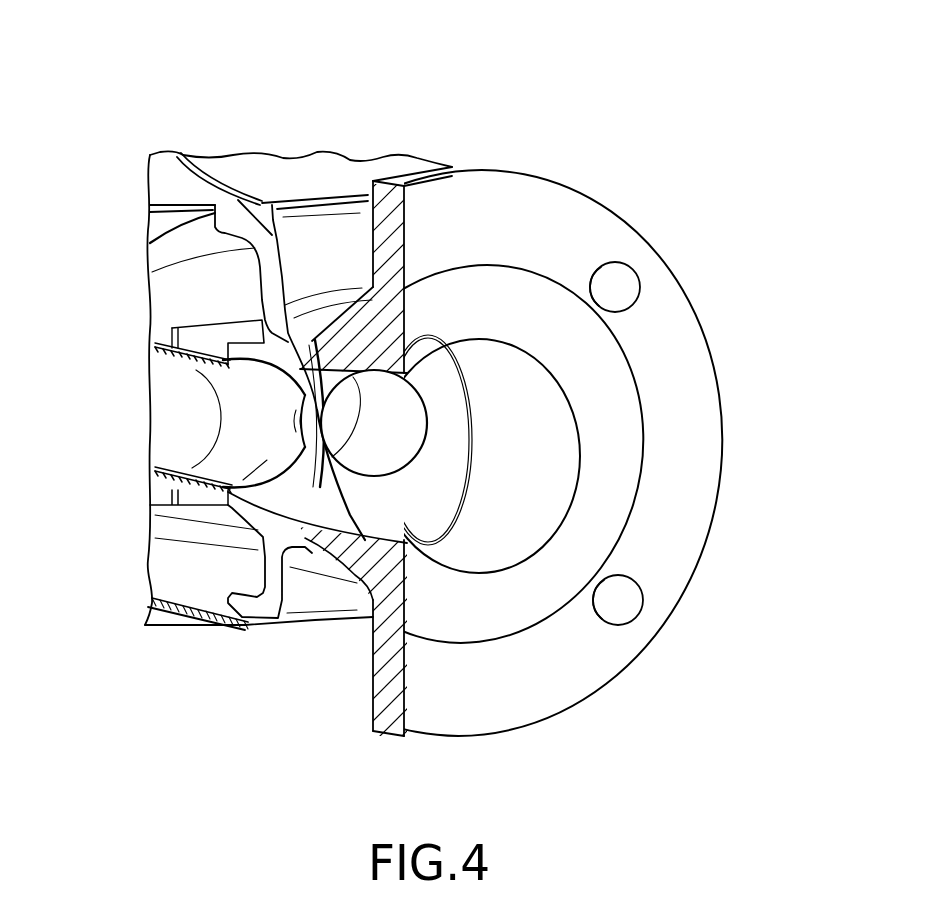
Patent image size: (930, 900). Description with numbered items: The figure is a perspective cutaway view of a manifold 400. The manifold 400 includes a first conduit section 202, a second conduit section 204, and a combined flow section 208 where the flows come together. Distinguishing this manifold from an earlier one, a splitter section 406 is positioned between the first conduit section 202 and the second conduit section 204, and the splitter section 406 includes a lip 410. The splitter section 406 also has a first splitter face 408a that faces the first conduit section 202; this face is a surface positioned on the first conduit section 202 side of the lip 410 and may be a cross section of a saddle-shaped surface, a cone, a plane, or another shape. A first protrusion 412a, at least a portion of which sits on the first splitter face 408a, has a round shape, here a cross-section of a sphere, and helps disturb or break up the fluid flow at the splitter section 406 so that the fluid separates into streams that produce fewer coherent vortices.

The manifold 400 is at (118, 76).
The first conduit section 202 is at (186, 435).
The second conduit section 204 is at (367, 418).
The combined flow section 208 is at (420, 503).
The splitter section 406 is at (272, 392).
The first splitter face 408a is at (298, 445).
The lip 410 is at (325, 368).
The first protrusion 412a is at (288, 412).